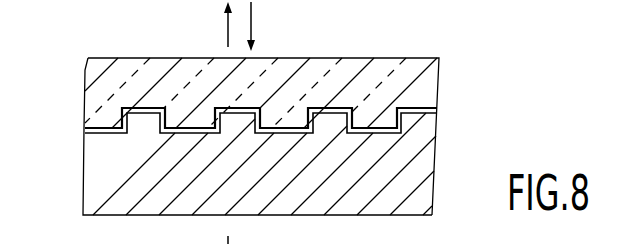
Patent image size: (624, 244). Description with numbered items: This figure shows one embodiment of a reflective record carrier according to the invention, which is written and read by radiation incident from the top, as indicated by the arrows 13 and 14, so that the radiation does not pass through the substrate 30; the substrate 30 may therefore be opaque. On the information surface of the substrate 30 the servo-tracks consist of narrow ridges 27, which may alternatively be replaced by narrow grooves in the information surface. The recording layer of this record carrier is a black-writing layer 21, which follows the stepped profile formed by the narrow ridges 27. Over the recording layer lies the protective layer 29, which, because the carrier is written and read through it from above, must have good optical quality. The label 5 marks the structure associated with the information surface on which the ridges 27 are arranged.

The arrow 14 is at (216, 123).
The arrow 13 is at (262, 26).
The black-writing layer 21 is at (373, 128).
The protective layer 29 is at (423, 92).
The thin film layer (element 2) 5 is at (292, 135).
The narrow ridges 27 is at (285, 138).
The substrate 30 is at (415, 202).